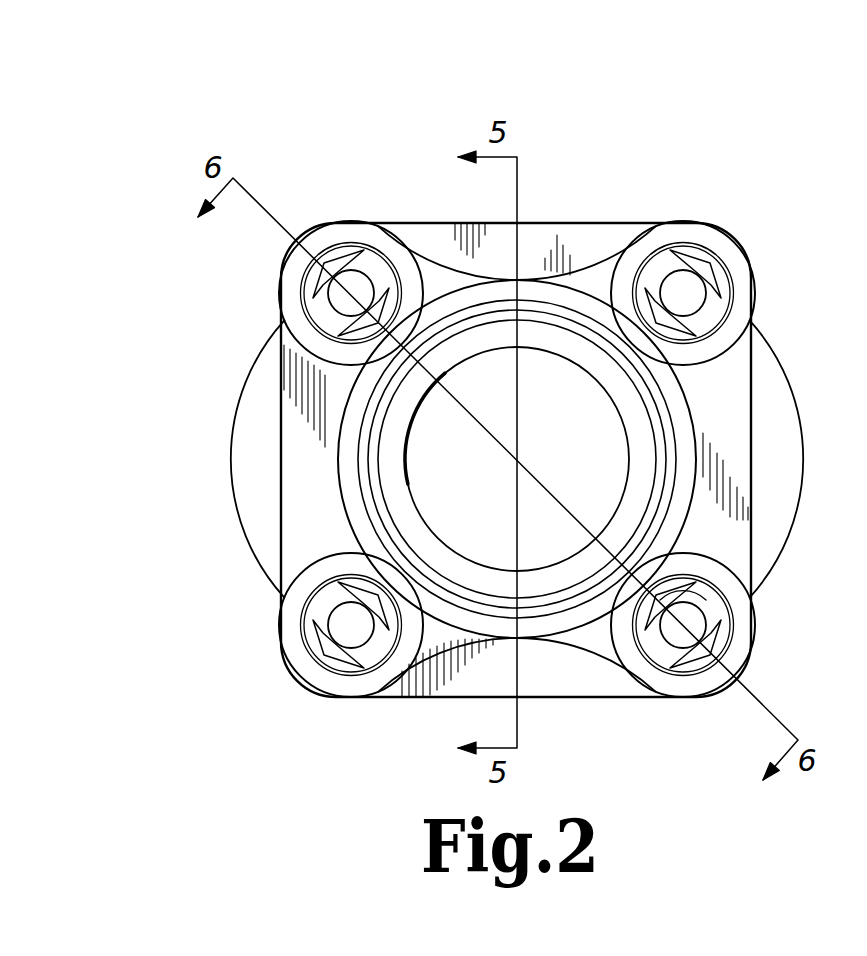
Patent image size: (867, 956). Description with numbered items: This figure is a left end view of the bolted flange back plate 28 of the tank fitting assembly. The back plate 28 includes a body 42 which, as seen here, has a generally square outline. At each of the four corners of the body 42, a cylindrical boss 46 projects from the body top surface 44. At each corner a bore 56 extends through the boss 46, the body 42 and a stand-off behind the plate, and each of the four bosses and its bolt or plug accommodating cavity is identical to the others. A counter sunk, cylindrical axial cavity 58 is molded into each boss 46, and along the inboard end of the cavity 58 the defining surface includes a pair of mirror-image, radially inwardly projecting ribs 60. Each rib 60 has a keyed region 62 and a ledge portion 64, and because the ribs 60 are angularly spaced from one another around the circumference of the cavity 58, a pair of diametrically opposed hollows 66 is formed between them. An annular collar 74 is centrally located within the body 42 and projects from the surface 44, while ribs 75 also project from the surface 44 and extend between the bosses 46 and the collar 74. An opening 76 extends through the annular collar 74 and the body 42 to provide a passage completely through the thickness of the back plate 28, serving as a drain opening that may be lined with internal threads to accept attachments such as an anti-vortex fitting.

The back plate 28 is at (387, 755).
The body 42 is at (755, 490).
The body top surface 44 is at (727, 370).
The cylindrical boss 46 is at (335, 236).
The bore 56 is at (307, 300).
The cavity 58 is at (653, 655).
The ribs 60 is at (700, 573).
The keyed region 62 is at (728, 318).
The ledge portion 64 is at (692, 255).
The hollows 66 is at (383, 238).
The annular collar 74 is at (343, 470).
The ribs 75 is at (280, 338).
The opening 76 is at (592, 432).